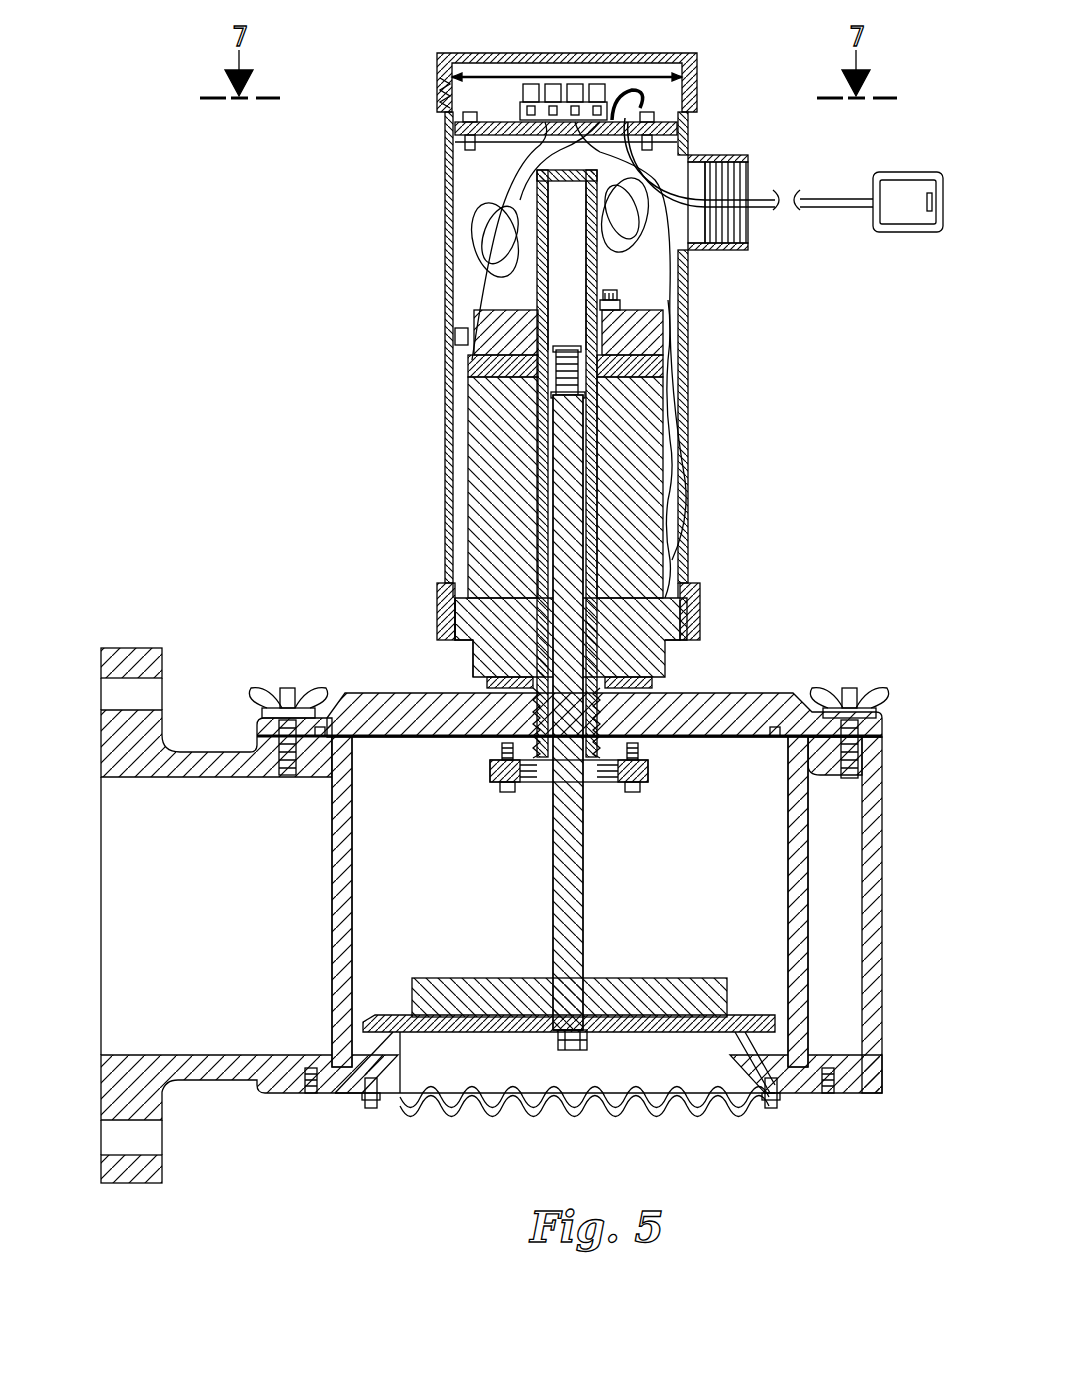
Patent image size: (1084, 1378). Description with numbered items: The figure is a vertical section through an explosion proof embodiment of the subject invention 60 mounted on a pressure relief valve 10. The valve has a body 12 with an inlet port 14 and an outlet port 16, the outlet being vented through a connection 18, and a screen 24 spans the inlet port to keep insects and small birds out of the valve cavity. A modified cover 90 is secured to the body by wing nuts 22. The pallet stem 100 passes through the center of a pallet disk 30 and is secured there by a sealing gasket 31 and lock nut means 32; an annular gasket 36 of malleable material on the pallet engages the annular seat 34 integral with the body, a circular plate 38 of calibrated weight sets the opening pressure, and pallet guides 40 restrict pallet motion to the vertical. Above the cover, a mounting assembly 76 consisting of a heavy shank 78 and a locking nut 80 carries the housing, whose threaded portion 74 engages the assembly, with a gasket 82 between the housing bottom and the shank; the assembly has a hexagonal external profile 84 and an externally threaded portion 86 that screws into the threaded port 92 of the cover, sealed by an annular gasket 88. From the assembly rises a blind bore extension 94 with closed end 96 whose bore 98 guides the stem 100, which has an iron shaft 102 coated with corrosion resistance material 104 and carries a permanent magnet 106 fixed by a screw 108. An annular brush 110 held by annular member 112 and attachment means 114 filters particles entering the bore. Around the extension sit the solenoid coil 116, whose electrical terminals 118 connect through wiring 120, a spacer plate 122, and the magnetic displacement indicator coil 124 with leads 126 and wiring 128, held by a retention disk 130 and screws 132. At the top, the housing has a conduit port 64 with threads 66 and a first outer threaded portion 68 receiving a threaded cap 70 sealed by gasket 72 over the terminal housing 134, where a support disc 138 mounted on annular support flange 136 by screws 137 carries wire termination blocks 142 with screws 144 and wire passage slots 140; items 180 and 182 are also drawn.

The pressure relief valve 10 is at (907, 898).
The body 12 is at (882, 860).
The inlet port 14 is at (454, 1140).
The outlet port 16 is at (226, 930).
The connection 18 is at (150, 650).
The wing nuts 22 is at (872, 692).
The screen 24 is at (590, 1116).
The pallet disk 30 is at (650, 1045).
The sealing gasket 31 is at (553, 1036).
The lock nut means 32 is at (576, 1055).
The annular seat 34 is at (390, 1060).
The annular gasket 36 is at (420, 1032).
The circular plate 38 is at (480, 976).
The pallet guides 40 is at (353, 858).
The subject invention 60 is at (304, 246).
The conduit port 64 is at (716, 160).
The threads 66 is at (730, 232).
The first outer threaded portion 68 is at (448, 128).
The threaded cap 70 is at (440, 72).
The gasket 72 is at (446, 86).
The threaded portion 74 is at (700, 598).
The mounting assembly 76 is at (700, 630).
The shank 78 is at (640, 648).
The locking nut 80 is at (700, 585).
The gasket 82 is at (445, 600).
The hexagonal external profile 84 is at (473, 655).
The externally threaded portion 86 is at (537, 722).
The annular gasket 88 is at (490, 682).
The modified cover 90 is at (790, 690).
The threaded port 92 is at (600, 722).
The blind bore extension 94 is at (520, 232).
The closed end 96 is at (537, 250).
The bore 98 is at (560, 265).
The pallet stem 100 is at (584, 846).
The iron shaft 102 is at (580, 878).
The corrosion resistance material 104 is at (586, 915).
The permanent magnet 106 is at (556, 398).
The screw 108 is at (551, 385).
The annular brush 110 is at (548, 780).
The annular member 112 is at (498, 778).
The attachment means 114 is at (505, 793).
The solenoid coil 116 is at (665, 440).
The electrical terminals 118 is at (665, 392).
The wiring 120 is at (683, 496).
The spacer plate 122 is at (485, 386).
The magnetic displacement indicator coil 124 is at (665, 366).
The leads 126 is at (478, 340).
The wiring 128 is at (455, 336).
The retention disk 130 is at (640, 295).
The screws 132 is at (620, 305).
The terminal housing 134 is at (490, 95).
The annular support flange 136 is at (485, 150).
The screws 137 is at (462, 92).
The support disc 138 is at (492, 165).
The wire passage slots 140 is at (500, 198).
The wire termination blocks 142 is at (528, 84).
The screws 144 is at (583, 95).
The cable 180 is at (778, 190).
The connector 182 is at (911, 172).